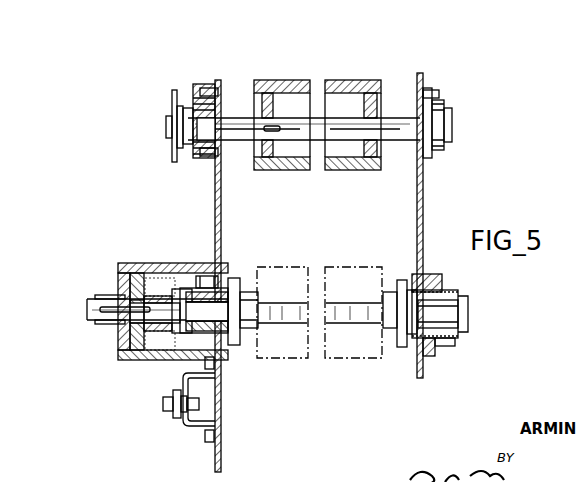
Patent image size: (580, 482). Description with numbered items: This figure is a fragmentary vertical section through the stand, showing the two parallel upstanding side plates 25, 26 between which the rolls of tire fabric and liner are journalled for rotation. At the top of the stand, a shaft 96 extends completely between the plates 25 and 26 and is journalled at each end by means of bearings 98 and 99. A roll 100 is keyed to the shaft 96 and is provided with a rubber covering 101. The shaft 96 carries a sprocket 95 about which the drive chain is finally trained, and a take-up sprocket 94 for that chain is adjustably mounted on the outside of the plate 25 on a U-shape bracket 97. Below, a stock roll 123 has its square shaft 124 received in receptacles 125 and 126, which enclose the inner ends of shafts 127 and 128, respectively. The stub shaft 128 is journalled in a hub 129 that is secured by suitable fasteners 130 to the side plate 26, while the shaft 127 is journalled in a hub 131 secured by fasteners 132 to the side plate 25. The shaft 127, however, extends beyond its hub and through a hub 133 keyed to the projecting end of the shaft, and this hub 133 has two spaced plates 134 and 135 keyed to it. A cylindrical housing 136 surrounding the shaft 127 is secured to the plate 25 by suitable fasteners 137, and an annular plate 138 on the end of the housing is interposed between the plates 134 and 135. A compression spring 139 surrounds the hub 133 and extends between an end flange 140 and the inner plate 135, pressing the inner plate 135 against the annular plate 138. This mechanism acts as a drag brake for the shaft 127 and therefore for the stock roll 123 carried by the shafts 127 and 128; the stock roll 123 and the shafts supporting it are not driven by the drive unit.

The side plate 25 is at (216, 240).
The side plate 26 is at (425, 206).
The take-up sprocket 94 is at (176, 410).
The sprocket 95 is at (174, 158).
The shaft 96 is at (242, 118).
The U-shape bracket 97 is at (198, 430).
The bearing 98 is at (188, 148).
The bearing 99 is at (440, 156).
The roll 100 is at (276, 118).
The rubber covering 101 is at (284, 171).
The stock roll 123 is at (350, 358).
The square shaft 124 is at (286, 314).
The receptacle 125 is at (244, 298).
The receptacle 126 is at (408, 352).
The shaft 127 is at (88, 316).
The stub shaft 128 is at (462, 312).
The hub 129 is at (448, 340).
The fasteners 130 is at (440, 280).
The hub 131 is at (178, 334).
The fasteners 132 is at (202, 276).
The hub 133 is at (102, 322).
The plate 134 is at (108, 286).
The inner plate 135 is at (137, 268).
The cylindrical housing 136 is at (144, 358).
The fasteners 137 is at (218, 372).
The annular plate 138 is at (132, 358).
The compression spring 139 is at (136, 272).
The end flange 140 is at (170, 338).